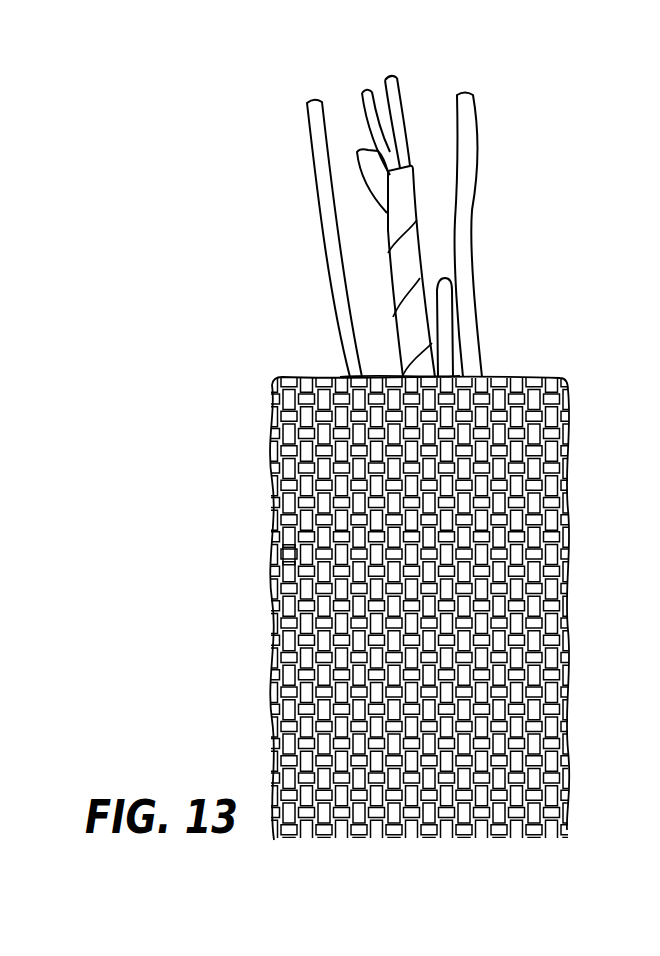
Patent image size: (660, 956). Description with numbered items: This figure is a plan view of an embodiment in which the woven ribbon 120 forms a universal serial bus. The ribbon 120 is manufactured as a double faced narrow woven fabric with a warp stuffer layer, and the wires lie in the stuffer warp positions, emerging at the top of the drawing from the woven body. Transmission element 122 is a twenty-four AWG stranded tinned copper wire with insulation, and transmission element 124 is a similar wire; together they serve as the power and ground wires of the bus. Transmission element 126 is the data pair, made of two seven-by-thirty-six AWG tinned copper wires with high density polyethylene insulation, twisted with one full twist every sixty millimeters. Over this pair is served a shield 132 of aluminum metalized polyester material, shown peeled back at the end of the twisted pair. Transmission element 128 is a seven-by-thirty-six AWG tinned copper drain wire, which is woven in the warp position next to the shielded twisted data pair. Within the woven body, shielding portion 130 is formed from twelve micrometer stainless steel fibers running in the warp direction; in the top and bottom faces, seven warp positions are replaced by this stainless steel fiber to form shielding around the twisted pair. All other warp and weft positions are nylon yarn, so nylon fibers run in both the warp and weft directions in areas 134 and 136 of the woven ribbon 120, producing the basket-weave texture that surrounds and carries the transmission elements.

The ribbon 120 is at (420, 442).
The transmission element 122 is at (315, 128).
The transmission element 124 is at (473, 132).
The transmission element 126 is at (407, 187).
The transmission element 128 is at (448, 318).
The shielding portion 130 is at (375, 377).
The shield 132 is at (365, 172).
The area 134 is at (550, 480).
The area 136 is at (290, 553).